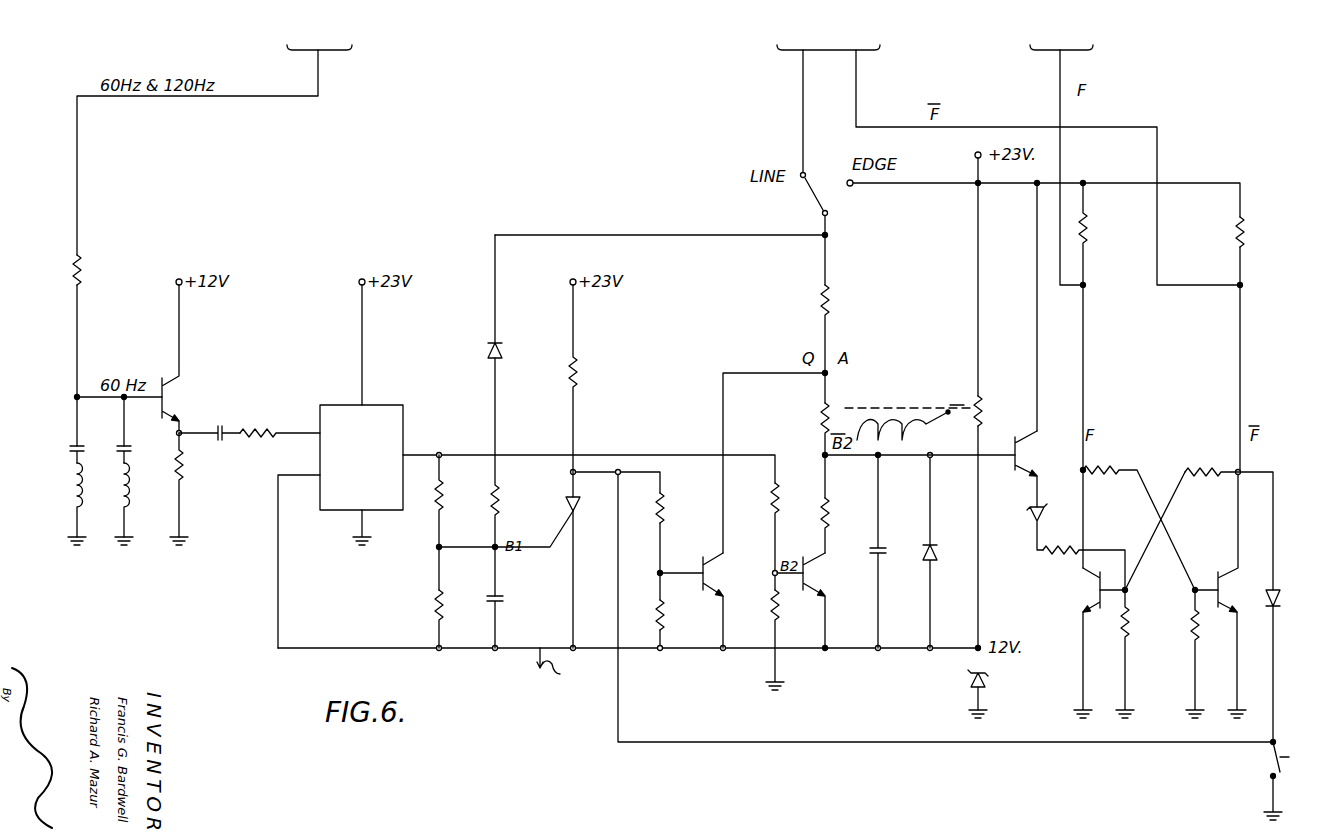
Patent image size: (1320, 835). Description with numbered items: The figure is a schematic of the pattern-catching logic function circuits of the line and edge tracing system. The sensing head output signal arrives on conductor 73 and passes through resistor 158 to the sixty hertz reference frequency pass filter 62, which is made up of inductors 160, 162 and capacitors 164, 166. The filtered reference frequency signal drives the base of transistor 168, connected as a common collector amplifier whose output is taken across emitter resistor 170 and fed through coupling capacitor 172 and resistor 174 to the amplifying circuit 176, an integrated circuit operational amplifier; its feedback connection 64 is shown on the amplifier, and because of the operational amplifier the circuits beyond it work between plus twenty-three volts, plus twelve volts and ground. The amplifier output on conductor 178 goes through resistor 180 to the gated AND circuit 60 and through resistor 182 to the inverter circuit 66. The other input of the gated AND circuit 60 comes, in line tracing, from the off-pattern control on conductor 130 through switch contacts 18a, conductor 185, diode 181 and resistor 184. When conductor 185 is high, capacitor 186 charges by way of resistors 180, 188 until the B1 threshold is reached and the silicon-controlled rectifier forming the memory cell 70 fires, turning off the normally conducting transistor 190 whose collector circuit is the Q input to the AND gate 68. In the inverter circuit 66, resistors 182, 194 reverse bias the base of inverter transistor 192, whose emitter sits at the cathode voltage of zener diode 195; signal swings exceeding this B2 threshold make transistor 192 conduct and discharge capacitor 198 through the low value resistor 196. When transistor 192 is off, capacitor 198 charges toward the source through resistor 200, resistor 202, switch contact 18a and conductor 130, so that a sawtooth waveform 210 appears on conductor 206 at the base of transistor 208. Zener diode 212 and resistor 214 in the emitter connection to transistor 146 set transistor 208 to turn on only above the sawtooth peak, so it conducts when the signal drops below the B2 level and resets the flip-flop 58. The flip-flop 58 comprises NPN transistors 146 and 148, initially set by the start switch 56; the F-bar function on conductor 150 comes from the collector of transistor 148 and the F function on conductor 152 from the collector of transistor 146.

The conductor 73 is at (78, 213).
The resistor 158 is at (81, 276).
The transistor 168 is at (164, 378).
The capacitor 164 is at (62, 452).
The capacitor 166 is at (118, 442).
The inductor 160 is at (62, 508).
The inductor 162 is at (120, 508).
The 60 hertz reference frequency pass filter 62 is at (89, 525).
The emitter resistor 170 is at (182, 474).
The coupling capacitor 172 is at (219, 427).
The resistor 174 is at (280, 421).
The amplifying circuit 176 is at (341, 404).
The conductor 178 is at (417, 454).
The feedback line 64 is at (261, 519).
The resistor 180 is at (437, 509).
The resistor 188 is at (436, 605).
The resistor 184 is at (499, 508).
The capacitor 186 is at (502, 600).
The memory cell 70 is at (565, 496).
The diode 181 is at (498, 345).
The conductor 185 is at (565, 237).
The conductor 130 is at (801, 117).
The switch contacts 18a is at (813, 201).
The conductor 150 is at (856, 105).
The conductor 152 is at (1060, 98).
The resistor 202 is at (829, 296).
The resistor 200 is at (822, 418).
The AND gate 68 is at (912, 372).
The waveform 210 is at (953, 403).
The transistor 208 is at (1017, 434).
The conductor 206 is at (910, 460).
The resistor 182 is at (772, 498).
The inverter circuit 66 is at (796, 520).
The resistor 196 is at (829, 505).
The transistor 190 is at (701, 563).
The resistor 194 is at (772, 608).
The inverter transistor 192 is at (809, 600).
The capacitor 198 is at (876, 555).
The zener diode 195 is at (971, 680).
The zener diode 212 is at (1036, 506).
The resistor 214 is at (1062, 555).
The NPN transistor 146 is at (1092, 610).
The NPN transistor 148 is at (1219, 610).
The flip-flop 58 is at (1162, 448).
The start switch 56 is at (1281, 748).
The gated AND circuit 60 is at (560, 670).